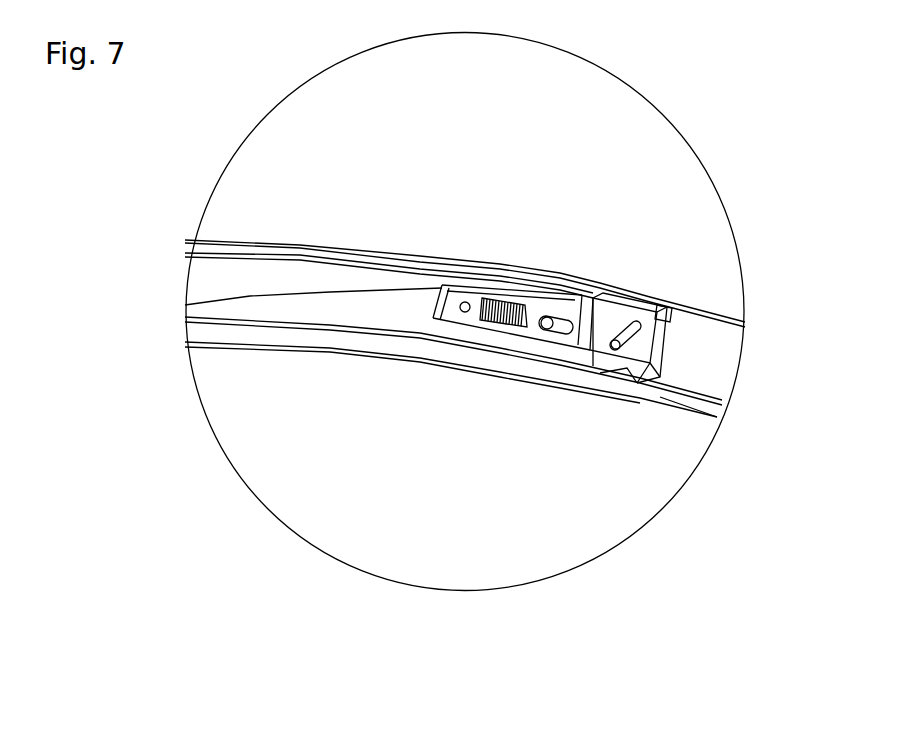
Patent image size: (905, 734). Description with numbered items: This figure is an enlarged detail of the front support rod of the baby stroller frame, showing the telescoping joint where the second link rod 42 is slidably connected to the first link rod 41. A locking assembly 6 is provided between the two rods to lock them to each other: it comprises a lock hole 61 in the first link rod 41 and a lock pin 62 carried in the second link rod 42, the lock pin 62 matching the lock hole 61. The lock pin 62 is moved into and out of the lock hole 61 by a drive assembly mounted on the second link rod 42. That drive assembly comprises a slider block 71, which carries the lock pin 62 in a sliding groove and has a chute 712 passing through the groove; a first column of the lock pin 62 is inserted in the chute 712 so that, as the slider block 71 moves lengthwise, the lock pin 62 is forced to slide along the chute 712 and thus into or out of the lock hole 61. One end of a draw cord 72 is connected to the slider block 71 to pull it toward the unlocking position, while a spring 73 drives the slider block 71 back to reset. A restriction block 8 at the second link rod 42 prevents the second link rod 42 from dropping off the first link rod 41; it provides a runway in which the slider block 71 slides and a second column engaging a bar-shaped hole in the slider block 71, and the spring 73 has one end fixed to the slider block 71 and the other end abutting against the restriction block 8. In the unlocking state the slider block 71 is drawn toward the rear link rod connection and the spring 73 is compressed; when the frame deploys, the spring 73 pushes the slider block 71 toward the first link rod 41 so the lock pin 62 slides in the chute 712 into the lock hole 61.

The locking assembly 6 is at (662, 622).
The lock hole 61 is at (641, 463).
The lock pin 62 is at (597, 387).
The slider block 71 is at (421, 325).
The chute 712 is at (740, 280).
The draw cord 72 is at (465, 228).
The spring 73 is at (472, 355).
The restriction block 8 is at (625, 252).
The first link rod 41 is at (451, 461).
The second link rod 42 is at (280, 411).